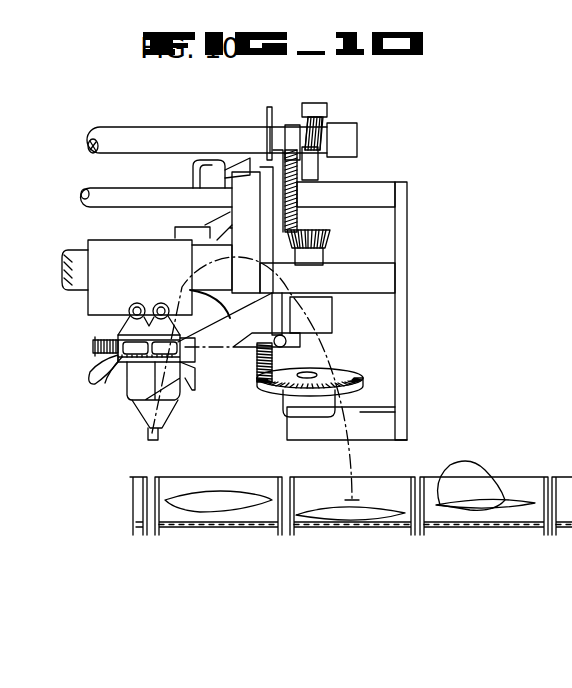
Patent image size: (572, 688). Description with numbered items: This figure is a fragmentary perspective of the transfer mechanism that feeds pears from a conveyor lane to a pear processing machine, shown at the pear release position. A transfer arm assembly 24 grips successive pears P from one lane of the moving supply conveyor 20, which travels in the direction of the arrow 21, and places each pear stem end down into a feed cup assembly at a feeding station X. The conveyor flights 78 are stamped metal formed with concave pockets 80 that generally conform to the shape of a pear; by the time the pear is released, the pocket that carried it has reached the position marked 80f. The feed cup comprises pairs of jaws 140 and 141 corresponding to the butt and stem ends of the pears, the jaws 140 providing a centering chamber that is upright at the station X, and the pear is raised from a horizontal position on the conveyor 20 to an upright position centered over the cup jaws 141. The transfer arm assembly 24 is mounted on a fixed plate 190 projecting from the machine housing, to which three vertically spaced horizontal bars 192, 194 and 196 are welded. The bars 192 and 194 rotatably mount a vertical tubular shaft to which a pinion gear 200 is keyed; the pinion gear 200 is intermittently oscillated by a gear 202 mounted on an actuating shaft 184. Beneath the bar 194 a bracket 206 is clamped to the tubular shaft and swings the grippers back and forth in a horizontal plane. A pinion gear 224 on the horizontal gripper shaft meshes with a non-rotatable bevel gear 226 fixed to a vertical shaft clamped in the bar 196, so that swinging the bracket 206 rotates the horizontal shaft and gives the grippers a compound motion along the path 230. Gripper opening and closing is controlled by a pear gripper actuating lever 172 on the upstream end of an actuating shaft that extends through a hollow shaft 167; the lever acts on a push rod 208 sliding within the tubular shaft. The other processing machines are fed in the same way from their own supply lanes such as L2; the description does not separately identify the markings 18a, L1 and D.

The upper shaft 18a is at (113, 123).
The hollow-shaft 167 is at (182, 129).
The push rod 208 is at (305, 125).
The pear gripper actuating lever 172 is at (317, 122).
The gear 202 is at (318, 163).
The actuating shaft 184 is at (148, 192).
The bracket 206 is at (192, 300).
The pinion gear 200 is at (360, 236).
The horizontal bar 192 is at (395, 197).
The fixed plate 190 is at (402, 222).
The horizontal bar 194 is at (395, 277).
The path 230 is at (307, 358).
The pinion gear 224 is at (255, 366).
The bevel gear 226 is at (290, 396).
The horizontal bar 196 is at (390, 432).
The transfer arm assembly 24 is at (113, 335).
The jaws 140 is at (92, 368).
The jaws 141 is at (142, 417).
The feeding station X is at (117, 405).
The supply conveyor 20 is at (528, 478).
The feed pocket position 80f is at (213, 497).
The concave pockets 80 is at (355, 520).
The pear P is at (460, 466).
The supply conveyor flights 78 is at (296, 530).
The arrow 21 is at (252, 548).
The level line 1 L1 is at (0, 497).
The supply lane L2 is at (0, 520).
The diameter D is at (0, 452).